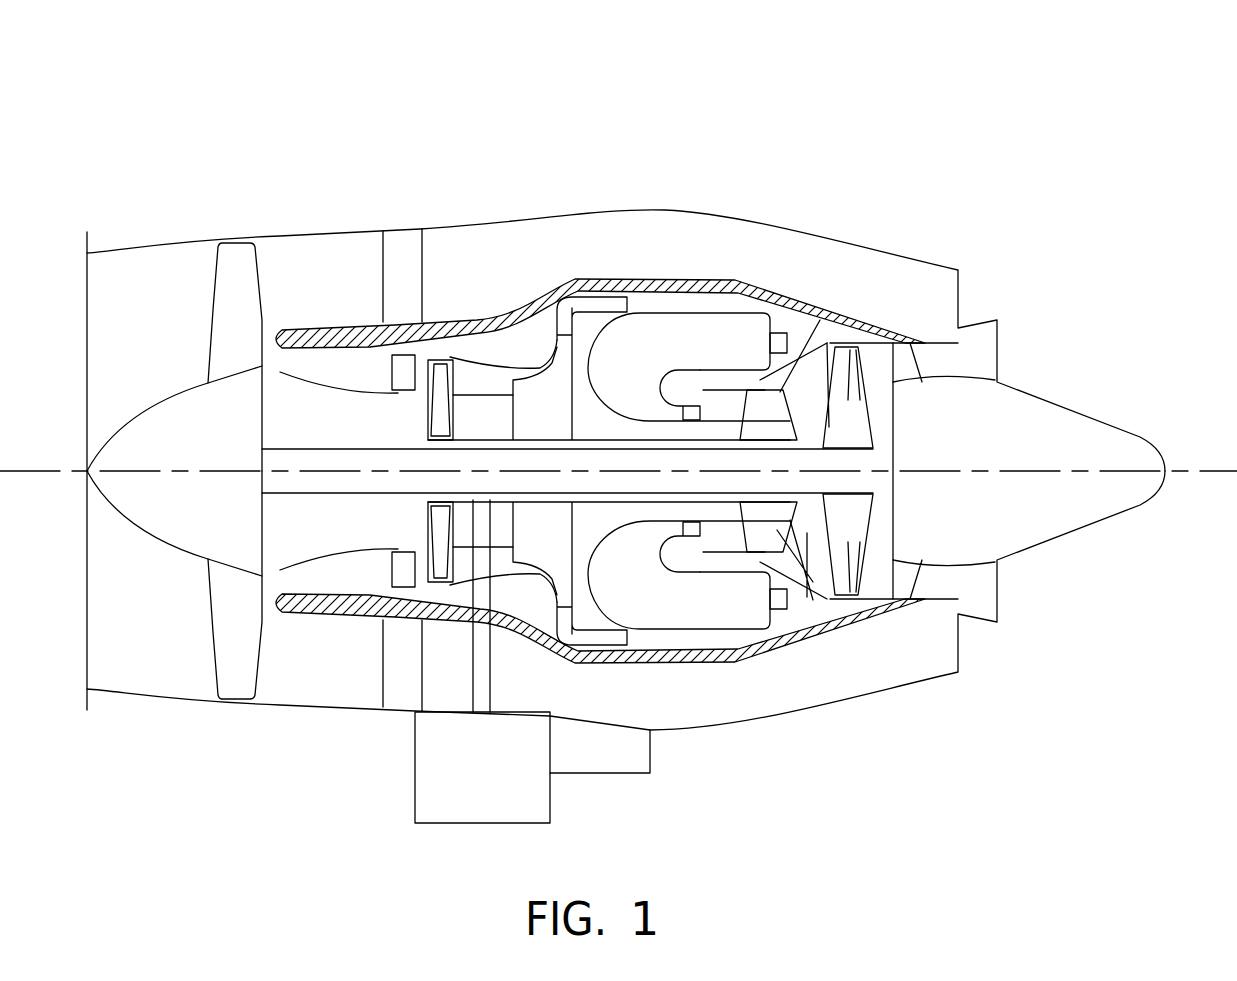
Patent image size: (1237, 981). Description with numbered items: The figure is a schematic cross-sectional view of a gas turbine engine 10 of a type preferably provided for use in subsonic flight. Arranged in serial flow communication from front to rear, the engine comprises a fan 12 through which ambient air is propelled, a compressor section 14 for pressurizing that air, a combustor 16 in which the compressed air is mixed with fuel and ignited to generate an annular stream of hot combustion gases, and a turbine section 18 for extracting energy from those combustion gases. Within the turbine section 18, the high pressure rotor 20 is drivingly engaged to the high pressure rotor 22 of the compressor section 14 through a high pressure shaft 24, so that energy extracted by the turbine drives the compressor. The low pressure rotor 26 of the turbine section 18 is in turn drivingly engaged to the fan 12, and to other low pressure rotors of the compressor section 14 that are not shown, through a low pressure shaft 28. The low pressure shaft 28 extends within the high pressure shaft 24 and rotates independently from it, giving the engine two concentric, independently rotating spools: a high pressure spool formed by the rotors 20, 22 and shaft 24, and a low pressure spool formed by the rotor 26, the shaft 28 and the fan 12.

The gas turbine engine 10 is at (826, 148).
The fan 12 is at (228, 620).
The compressor section 14 is at (472, 375).
The combustor 16 is at (684, 338).
The turbine section 18 is at (821, 633).
The high pressure rotor 20 is at (787, 410).
The high pressure rotor 22 is at (543, 397).
The high pressure shaft 24 is at (700, 388).
The low pressure rotor 26 is at (863, 343).
The low pressure shaft 28 is at (318, 493).